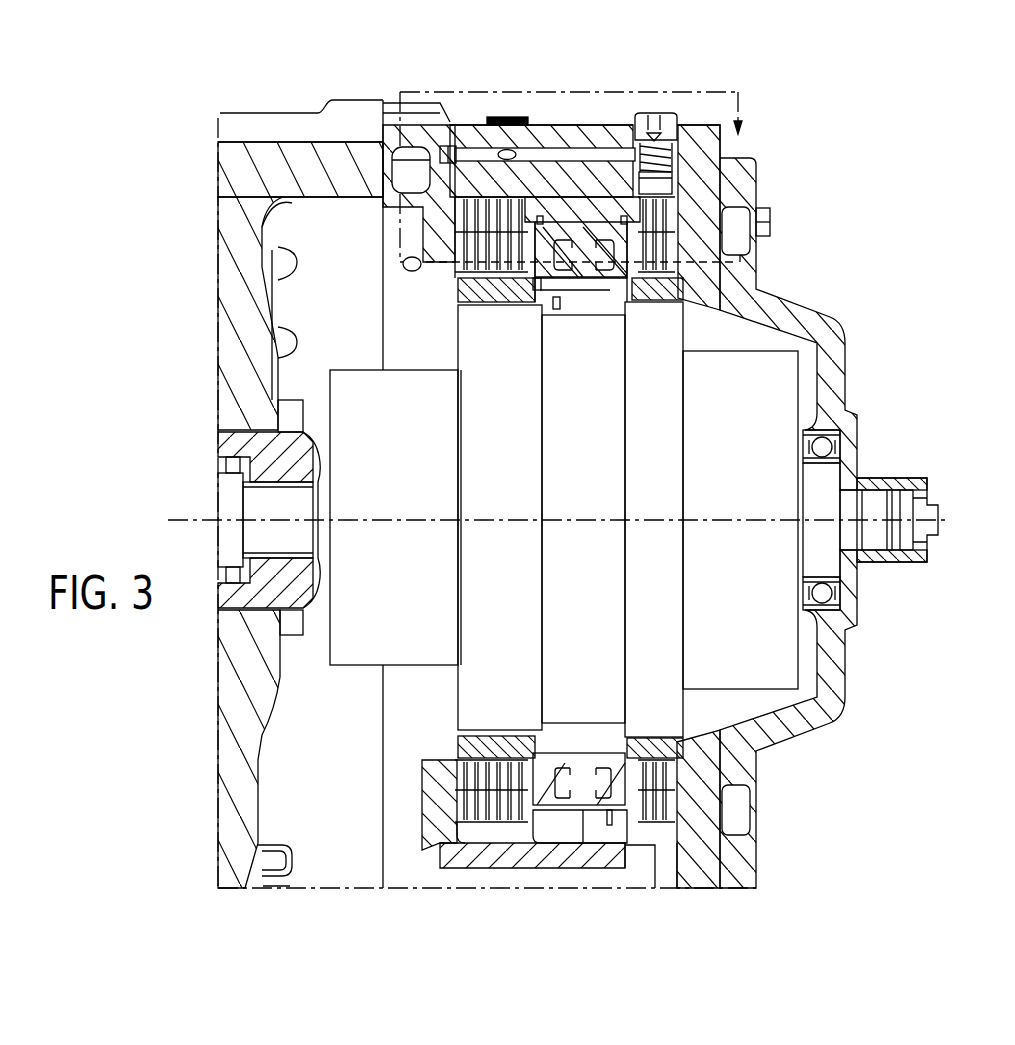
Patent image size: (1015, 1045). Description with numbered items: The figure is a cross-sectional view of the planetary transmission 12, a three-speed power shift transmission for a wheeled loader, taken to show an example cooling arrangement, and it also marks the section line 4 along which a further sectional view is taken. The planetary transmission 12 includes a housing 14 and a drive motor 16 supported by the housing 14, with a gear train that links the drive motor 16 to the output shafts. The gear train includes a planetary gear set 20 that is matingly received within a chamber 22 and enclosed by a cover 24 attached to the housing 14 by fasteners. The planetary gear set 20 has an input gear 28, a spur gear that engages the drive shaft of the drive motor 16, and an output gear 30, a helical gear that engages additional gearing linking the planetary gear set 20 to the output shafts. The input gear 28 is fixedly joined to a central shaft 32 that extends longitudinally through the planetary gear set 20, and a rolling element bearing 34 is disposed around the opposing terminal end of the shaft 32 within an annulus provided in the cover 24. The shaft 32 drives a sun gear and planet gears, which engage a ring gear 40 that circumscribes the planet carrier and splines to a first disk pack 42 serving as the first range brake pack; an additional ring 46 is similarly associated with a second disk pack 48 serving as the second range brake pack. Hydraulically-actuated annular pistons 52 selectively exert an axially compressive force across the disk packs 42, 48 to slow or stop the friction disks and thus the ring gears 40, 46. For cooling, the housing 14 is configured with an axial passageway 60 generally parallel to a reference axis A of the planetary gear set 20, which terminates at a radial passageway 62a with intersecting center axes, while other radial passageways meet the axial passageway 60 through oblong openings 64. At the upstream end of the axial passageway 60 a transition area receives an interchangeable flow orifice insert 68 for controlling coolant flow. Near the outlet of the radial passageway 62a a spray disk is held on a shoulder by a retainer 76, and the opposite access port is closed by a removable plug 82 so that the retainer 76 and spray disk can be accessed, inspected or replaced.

The section line 4- 4 is at (755, 195).
The planetary transmission 12 is at (836, 171).
The housing 14 is at (290, 120).
The drive motor 16 is at (222, 318).
The planetary gear set 20 is at (686, 726).
The chamber 22 is at (493, 838).
The cover 24 is at (797, 727).
The input gear 28 is at (223, 488).
The output gear 30 is at (360, 655).
The central shaft 32 is at (875, 533).
The rolling element bearing 34 is at (828, 605).
The ring gear 40 is at (458, 292).
The first disk pack 42 is at (518, 209).
The additional ring 46 is at (677, 290).
The second disk pack 48 is at (642, 209).
The annular pistons 52 is at (612, 268).
The axial passageway 60 is at (563, 157).
The radial passageway 62a is at (672, 183).
The openings 64 is at (515, 157).
The flow orifice insert 68 is at (450, 146).
The retainer 76 is at (668, 153).
The plug 82 is at (508, 117).
The reference axis A is at (951, 521).